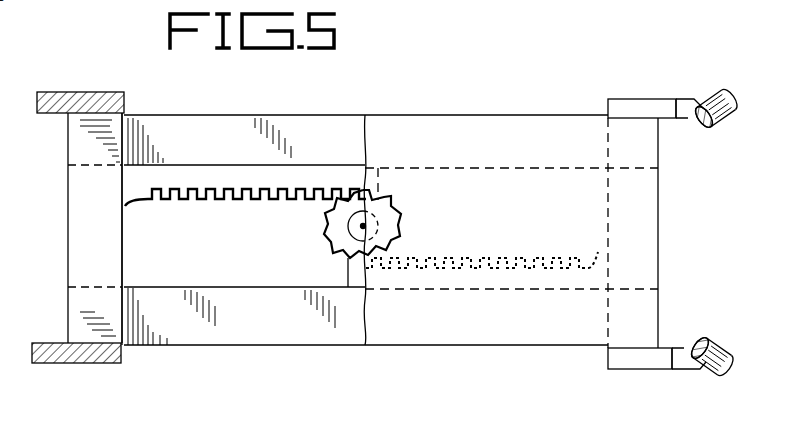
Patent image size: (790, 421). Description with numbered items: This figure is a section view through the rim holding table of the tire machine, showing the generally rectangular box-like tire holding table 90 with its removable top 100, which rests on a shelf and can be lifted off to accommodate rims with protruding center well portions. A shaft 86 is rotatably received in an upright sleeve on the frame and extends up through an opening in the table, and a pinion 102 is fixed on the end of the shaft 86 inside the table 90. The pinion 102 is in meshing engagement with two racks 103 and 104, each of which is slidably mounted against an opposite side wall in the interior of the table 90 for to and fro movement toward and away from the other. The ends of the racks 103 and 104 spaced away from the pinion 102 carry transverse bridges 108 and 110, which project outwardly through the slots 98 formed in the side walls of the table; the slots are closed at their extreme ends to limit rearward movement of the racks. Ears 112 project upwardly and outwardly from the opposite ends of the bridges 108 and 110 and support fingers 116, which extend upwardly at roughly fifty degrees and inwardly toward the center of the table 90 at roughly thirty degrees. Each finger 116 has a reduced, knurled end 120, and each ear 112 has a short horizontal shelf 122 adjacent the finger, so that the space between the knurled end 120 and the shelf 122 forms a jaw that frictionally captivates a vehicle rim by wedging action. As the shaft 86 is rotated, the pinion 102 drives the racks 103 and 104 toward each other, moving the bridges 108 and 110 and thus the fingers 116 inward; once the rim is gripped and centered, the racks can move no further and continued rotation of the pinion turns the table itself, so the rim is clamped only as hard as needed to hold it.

The shaft 86 is at (352, 236).
The tire holding table 90 is at (500, 86).
The slots 98 is at (435, 170).
The top 100 is at (550, 201).
The pinion 102 is at (328, 232).
The rack 103 is at (160, 198).
The rack 104 is at (498, 257).
The transverse bridge 108 is at (125, 244).
The transverse bridge 110 is at (606, 208).
The ears 112 is at (82, 92).
The fingers 116 is at (720, 120).
The knurled end 120 is at (706, 124).
The shelf 122 is at (688, 102).